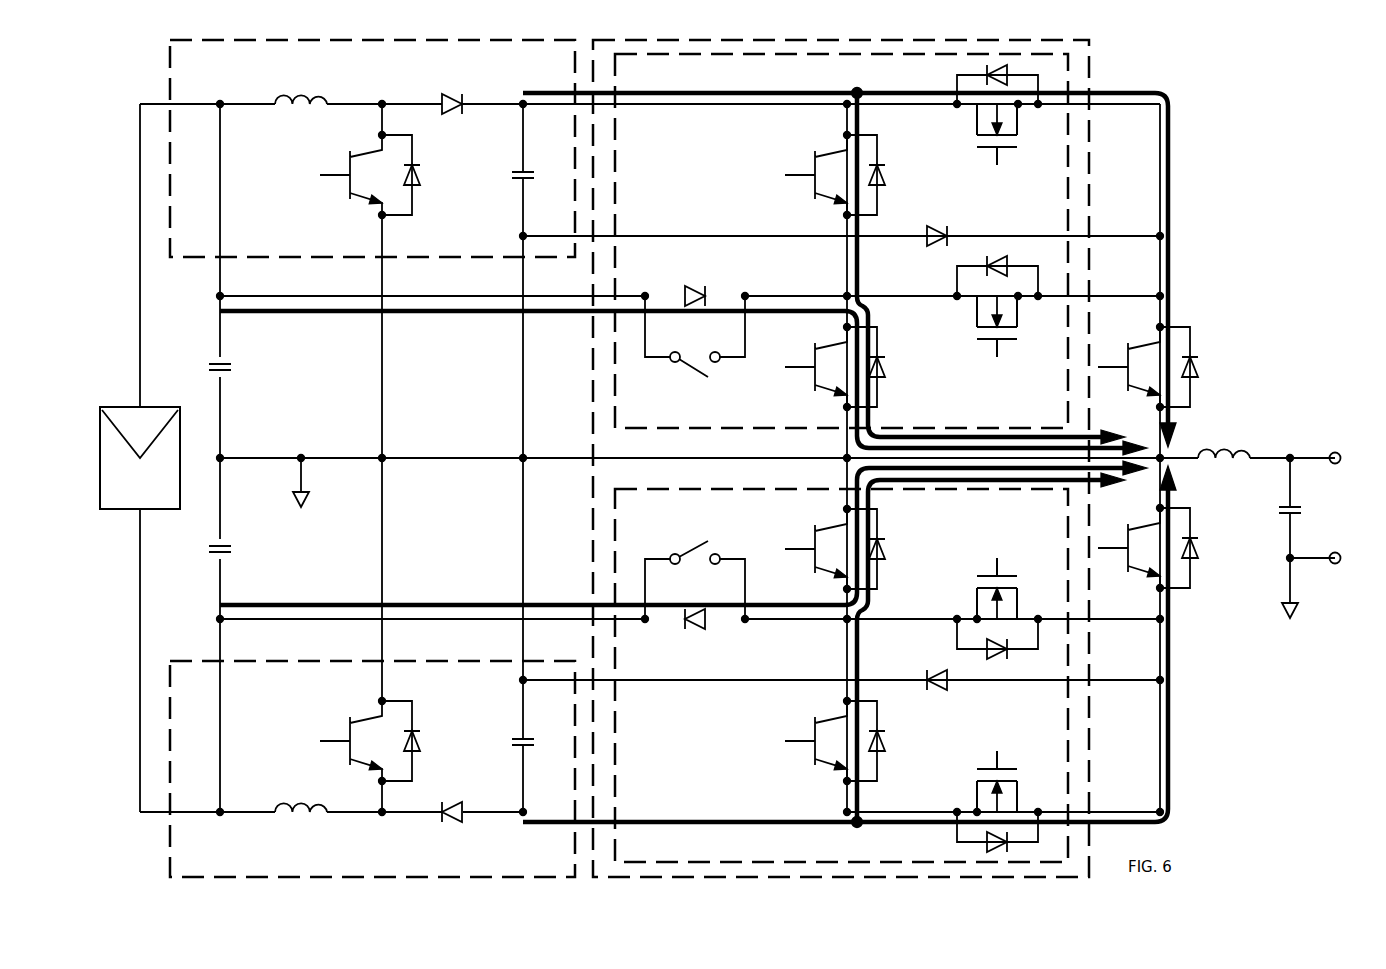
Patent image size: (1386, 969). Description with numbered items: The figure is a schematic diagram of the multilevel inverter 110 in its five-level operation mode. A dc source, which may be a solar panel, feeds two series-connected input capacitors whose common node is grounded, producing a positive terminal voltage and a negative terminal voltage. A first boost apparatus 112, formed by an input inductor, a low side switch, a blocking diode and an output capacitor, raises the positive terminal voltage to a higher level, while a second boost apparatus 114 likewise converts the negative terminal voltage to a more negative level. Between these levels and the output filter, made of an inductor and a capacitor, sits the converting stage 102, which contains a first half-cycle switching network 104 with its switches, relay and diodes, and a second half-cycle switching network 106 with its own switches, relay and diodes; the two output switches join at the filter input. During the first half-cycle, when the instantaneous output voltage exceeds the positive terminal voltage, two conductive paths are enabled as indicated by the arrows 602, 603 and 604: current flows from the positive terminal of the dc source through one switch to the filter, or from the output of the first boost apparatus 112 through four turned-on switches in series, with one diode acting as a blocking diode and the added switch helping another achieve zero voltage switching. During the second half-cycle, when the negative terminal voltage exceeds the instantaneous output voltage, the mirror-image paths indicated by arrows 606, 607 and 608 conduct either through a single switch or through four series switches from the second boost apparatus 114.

The converting stage 102 is at (1099, 83).
The first half-cycle switching network 104 is at (723, 179).
The second half-cycle switching network 106 is at (723, 754).
The multilevel inverter 110 is at (1240, 124).
The first boost apparatus 112 is at (163, 79).
The second boost apparatus 114 is at (163, 839).
The arrow 602 is at (998, 433).
The arrow 603 is at (463, 313).
The arrow 604 is at (1174, 216).
The arrow 606 is at (998, 484).
The arrow 607 is at (463, 603).
The arrow 608 is at (1174, 700).